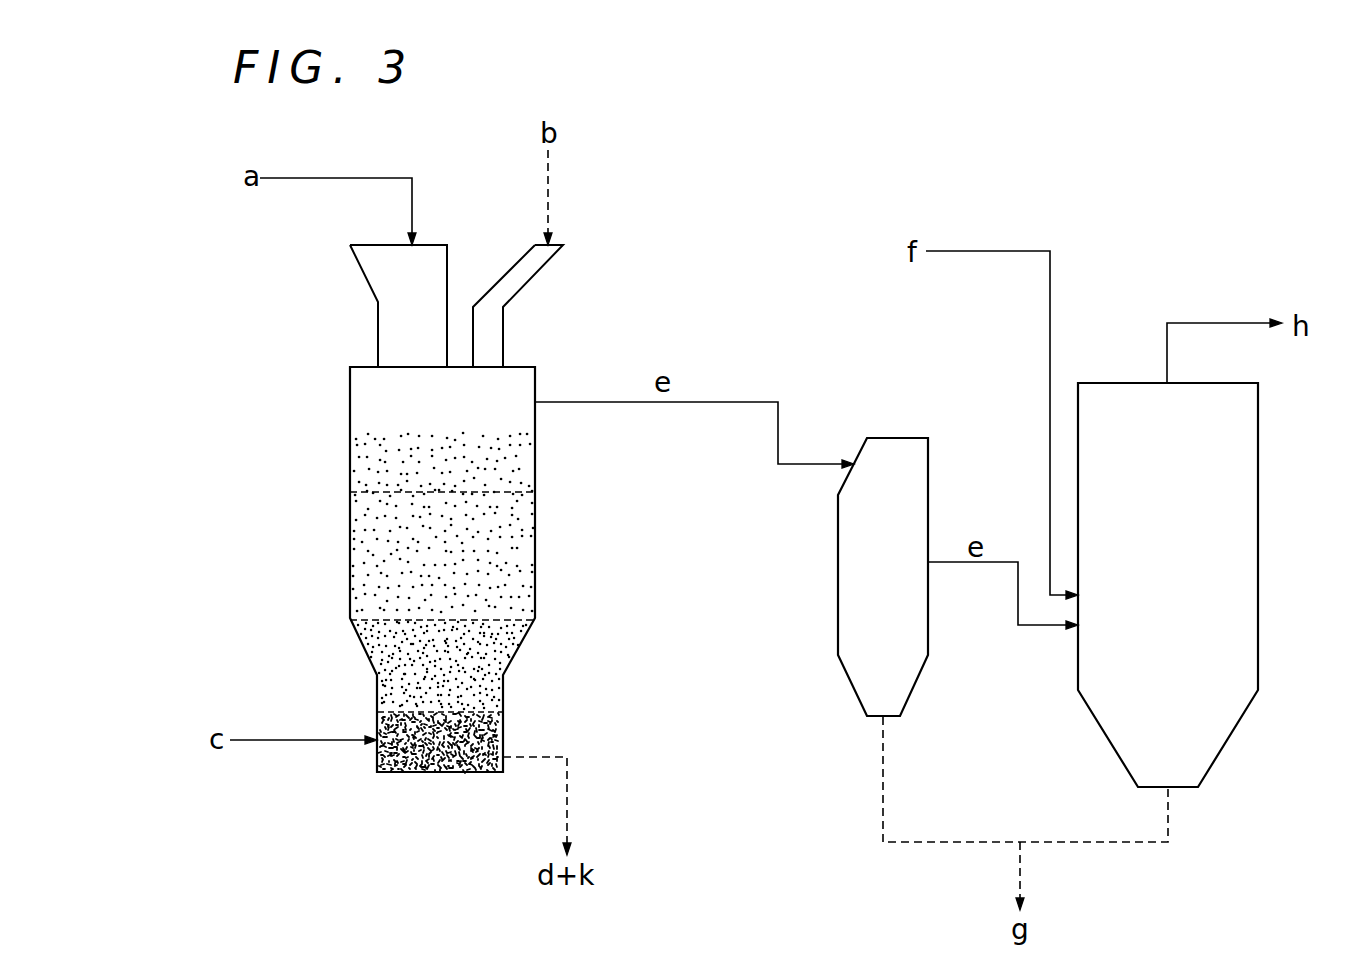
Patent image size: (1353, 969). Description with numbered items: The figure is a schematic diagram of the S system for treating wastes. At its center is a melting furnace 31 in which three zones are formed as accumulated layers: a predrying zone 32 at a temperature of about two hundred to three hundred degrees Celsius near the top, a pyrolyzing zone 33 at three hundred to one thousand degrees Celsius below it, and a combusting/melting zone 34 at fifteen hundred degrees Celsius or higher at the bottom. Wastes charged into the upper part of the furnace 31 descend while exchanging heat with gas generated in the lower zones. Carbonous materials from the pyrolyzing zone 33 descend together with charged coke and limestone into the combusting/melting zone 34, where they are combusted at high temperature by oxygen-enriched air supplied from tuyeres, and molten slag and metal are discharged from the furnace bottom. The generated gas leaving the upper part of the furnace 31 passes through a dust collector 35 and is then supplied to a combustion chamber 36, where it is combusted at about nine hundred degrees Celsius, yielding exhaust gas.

The furnace 31 is at (351, 392).
The predrying zone 32 is at (522, 538).
The pyrolyzing zone 33 is at (497, 662).
The combusting/melting zone 34 is at (505, 745).
The dust collector 35 is at (838, 537).
The combustion chamber 36 is at (1258, 478).